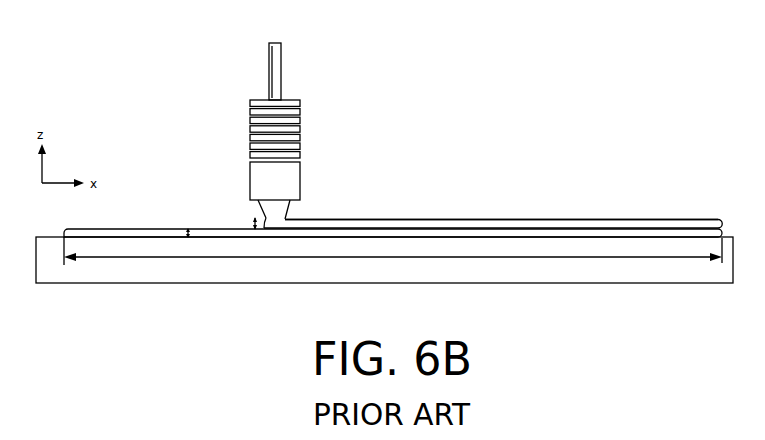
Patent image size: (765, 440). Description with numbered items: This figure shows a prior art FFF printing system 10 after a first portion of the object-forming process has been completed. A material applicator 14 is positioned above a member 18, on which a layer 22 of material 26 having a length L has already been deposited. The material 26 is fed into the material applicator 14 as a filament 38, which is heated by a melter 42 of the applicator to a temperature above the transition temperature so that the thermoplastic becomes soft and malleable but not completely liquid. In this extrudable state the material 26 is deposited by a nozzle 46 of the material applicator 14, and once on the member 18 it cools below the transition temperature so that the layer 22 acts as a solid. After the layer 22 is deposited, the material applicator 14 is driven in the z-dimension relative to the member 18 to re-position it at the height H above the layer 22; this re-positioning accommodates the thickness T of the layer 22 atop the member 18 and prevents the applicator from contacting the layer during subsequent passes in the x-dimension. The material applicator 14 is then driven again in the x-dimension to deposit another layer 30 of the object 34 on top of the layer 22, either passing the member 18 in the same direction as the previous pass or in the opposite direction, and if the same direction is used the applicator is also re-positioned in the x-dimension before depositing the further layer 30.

The FFF printing system 10 is at (370, 78).
The material applicator 14 is at (216, 116).
The member 18 is at (193, 275).
The layer 22 is at (134, 233).
The material 26 is at (276, 57).
The layer 30 is at (428, 220).
The object 34 is at (666, 210).
The filament 38 is at (275, 73).
The melter 42 is at (302, 122).
The nozzle 46 is at (292, 180).
The thickness T is at (186, 232).
The height H is at (250, 226).
The length L is at (368, 258).